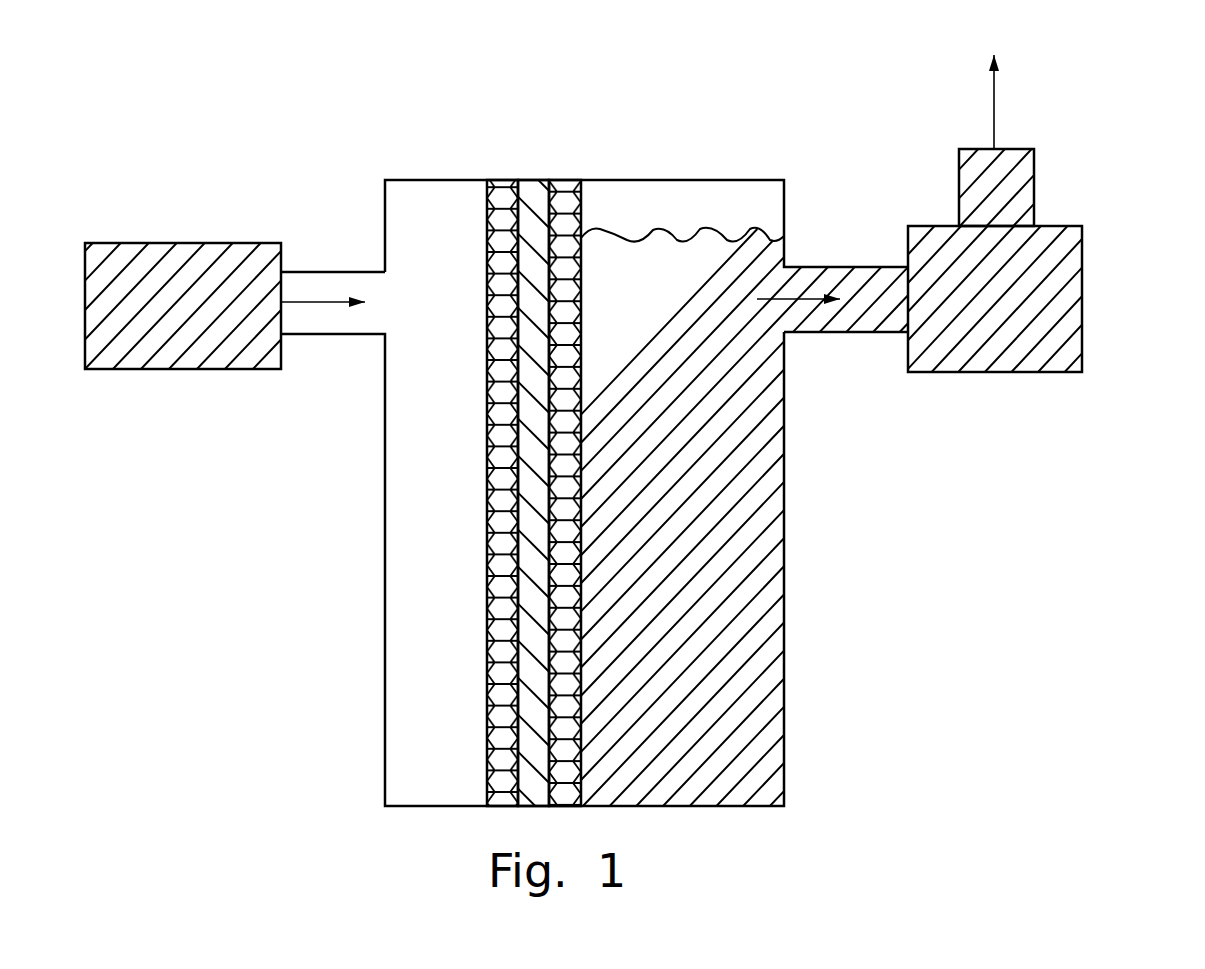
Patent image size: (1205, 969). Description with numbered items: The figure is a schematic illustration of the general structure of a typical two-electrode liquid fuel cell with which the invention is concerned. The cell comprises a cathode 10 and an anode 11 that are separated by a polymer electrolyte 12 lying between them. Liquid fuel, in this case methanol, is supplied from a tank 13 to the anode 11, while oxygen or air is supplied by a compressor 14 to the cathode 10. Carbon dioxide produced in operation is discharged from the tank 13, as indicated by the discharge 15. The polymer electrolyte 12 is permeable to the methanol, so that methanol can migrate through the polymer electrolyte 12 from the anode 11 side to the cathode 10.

The cathode 10 is at (498, 180).
The anode 11 is at (568, 180).
The polymer electrolyte 12 is at (533, 180).
The tank 13 is at (1062, 268).
The compressor 14 is at (170, 358).
The CO2 discharge 15 is at (996, 124).